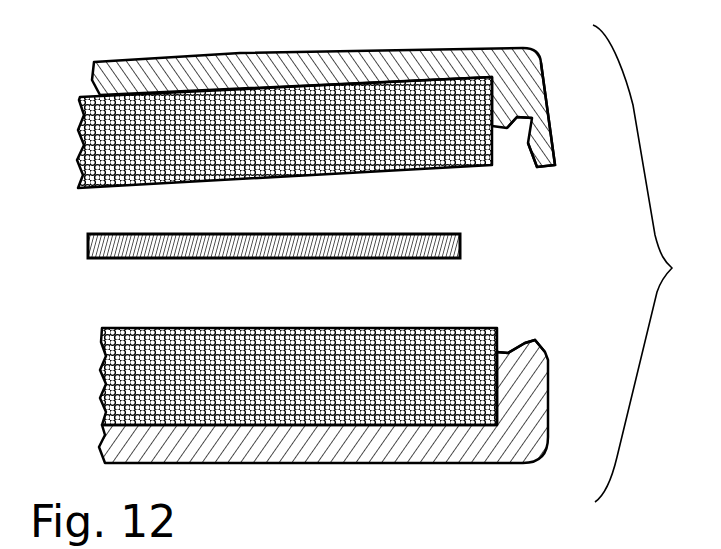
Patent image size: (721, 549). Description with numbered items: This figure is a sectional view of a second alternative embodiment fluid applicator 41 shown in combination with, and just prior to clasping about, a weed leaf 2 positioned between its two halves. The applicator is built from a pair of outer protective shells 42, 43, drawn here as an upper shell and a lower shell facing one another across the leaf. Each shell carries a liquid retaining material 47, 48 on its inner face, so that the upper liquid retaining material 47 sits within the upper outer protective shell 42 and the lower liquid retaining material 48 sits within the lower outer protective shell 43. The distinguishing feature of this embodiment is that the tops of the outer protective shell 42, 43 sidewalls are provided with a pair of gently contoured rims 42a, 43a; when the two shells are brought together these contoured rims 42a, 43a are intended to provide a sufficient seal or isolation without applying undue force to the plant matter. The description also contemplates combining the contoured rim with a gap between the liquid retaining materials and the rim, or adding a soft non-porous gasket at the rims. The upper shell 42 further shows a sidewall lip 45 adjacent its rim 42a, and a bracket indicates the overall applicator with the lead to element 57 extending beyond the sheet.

The fluid applicator 41 is at (98, 23).
The outer protective shell 42 is at (392, 52).
The gently contoured rim 42a is at (520, 120).
The outer protective shell 43 is at (362, 463).
The gently contoured rim 43a is at (534, 341).
The lip of upper housing part 45 is at (555, 158).
The upper foam insulation 47 is at (312, 150).
The lower foam insulation 48 is at (375, 390).
The plate 2 is at (167, 258).
The element 57 is at (720, 524).